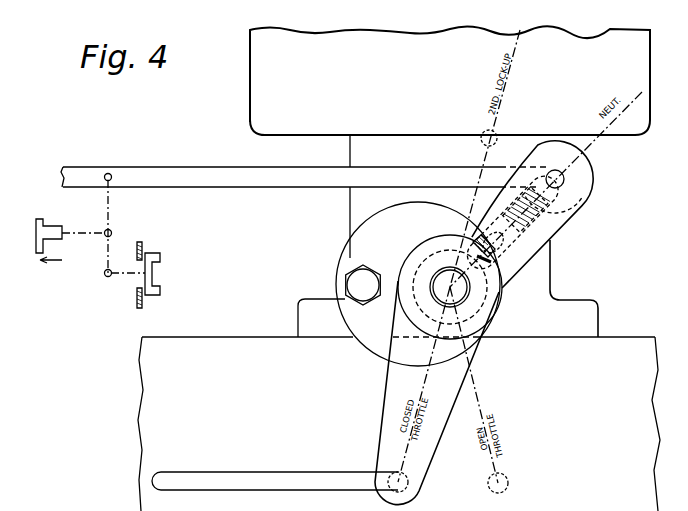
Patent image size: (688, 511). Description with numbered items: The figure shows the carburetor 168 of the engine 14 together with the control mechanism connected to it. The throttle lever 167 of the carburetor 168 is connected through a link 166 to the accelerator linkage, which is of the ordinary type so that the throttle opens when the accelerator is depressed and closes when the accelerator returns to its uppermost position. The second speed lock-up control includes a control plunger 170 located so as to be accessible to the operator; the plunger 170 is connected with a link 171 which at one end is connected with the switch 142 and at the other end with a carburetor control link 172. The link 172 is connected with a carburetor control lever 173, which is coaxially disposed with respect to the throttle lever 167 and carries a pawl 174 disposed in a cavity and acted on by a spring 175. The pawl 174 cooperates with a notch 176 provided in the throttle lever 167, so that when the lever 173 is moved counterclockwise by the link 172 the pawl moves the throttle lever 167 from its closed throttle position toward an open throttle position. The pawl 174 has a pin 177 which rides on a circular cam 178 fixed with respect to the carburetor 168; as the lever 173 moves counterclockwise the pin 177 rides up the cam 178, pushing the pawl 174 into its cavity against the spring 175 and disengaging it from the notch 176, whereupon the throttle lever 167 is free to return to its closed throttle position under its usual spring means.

The engine 14 is at (652, 319).
The switch 142 is at (157, 252).
The link 166 is at (301, 471).
The throttle lever 167 is at (392, 382).
The carburetor 168 is at (549, 253).
The control plunger 170 is at (38, 222).
The link 171 is at (110, 210).
The carburetor control link 172 is at (176, 166).
The carburetor control lever 173 is at (591, 182).
The pawl 174 is at (538, 325).
The spring 175 is at (573, 211).
The notch 176 is at (471, 240).
The pin 177 is at (552, 277).
The circular cam 178 is at (370, 216).